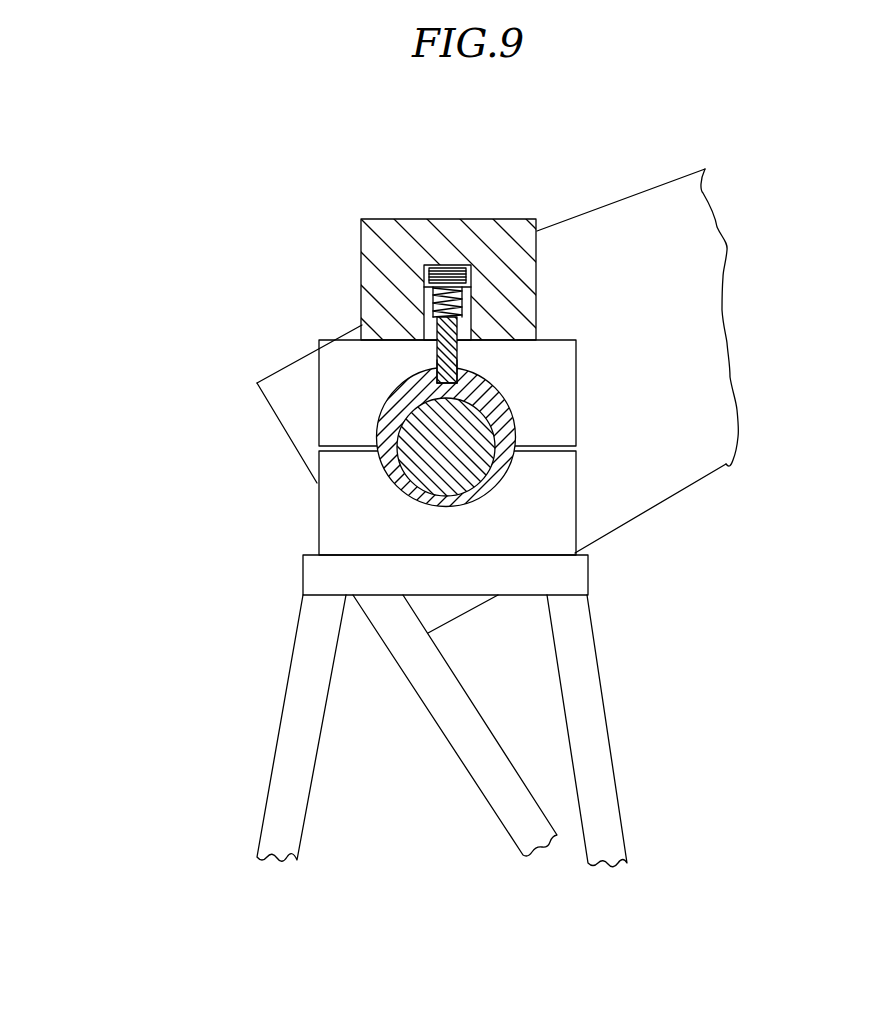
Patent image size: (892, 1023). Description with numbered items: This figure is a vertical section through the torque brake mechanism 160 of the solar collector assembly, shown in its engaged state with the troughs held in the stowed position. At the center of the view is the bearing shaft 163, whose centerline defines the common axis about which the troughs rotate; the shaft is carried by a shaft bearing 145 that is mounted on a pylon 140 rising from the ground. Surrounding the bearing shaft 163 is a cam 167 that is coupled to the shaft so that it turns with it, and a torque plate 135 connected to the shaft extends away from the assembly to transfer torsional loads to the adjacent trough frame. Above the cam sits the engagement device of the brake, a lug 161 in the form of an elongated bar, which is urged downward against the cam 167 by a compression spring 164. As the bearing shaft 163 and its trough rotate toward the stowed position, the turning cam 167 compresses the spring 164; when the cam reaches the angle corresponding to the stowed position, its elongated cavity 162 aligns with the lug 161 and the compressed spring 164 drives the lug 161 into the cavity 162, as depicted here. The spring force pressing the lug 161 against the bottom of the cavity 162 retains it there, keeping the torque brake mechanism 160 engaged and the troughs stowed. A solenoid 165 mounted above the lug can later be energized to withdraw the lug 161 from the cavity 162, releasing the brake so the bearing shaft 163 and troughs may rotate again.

The torque brake mechanism 160 is at (200, 245).
The solenoid 165 is at (361, 237).
The compression spring 164 is at (425, 298).
The lug 161 is at (437, 353).
The cavity 162 is at (430, 370).
The cam 167 is at (377, 425).
The shaft bearing 145 is at (317, 502).
The torque plate 135 is at (727, 465).
The bearing shaft 163 is at (482, 487).
The pylon 140 is at (605, 698).